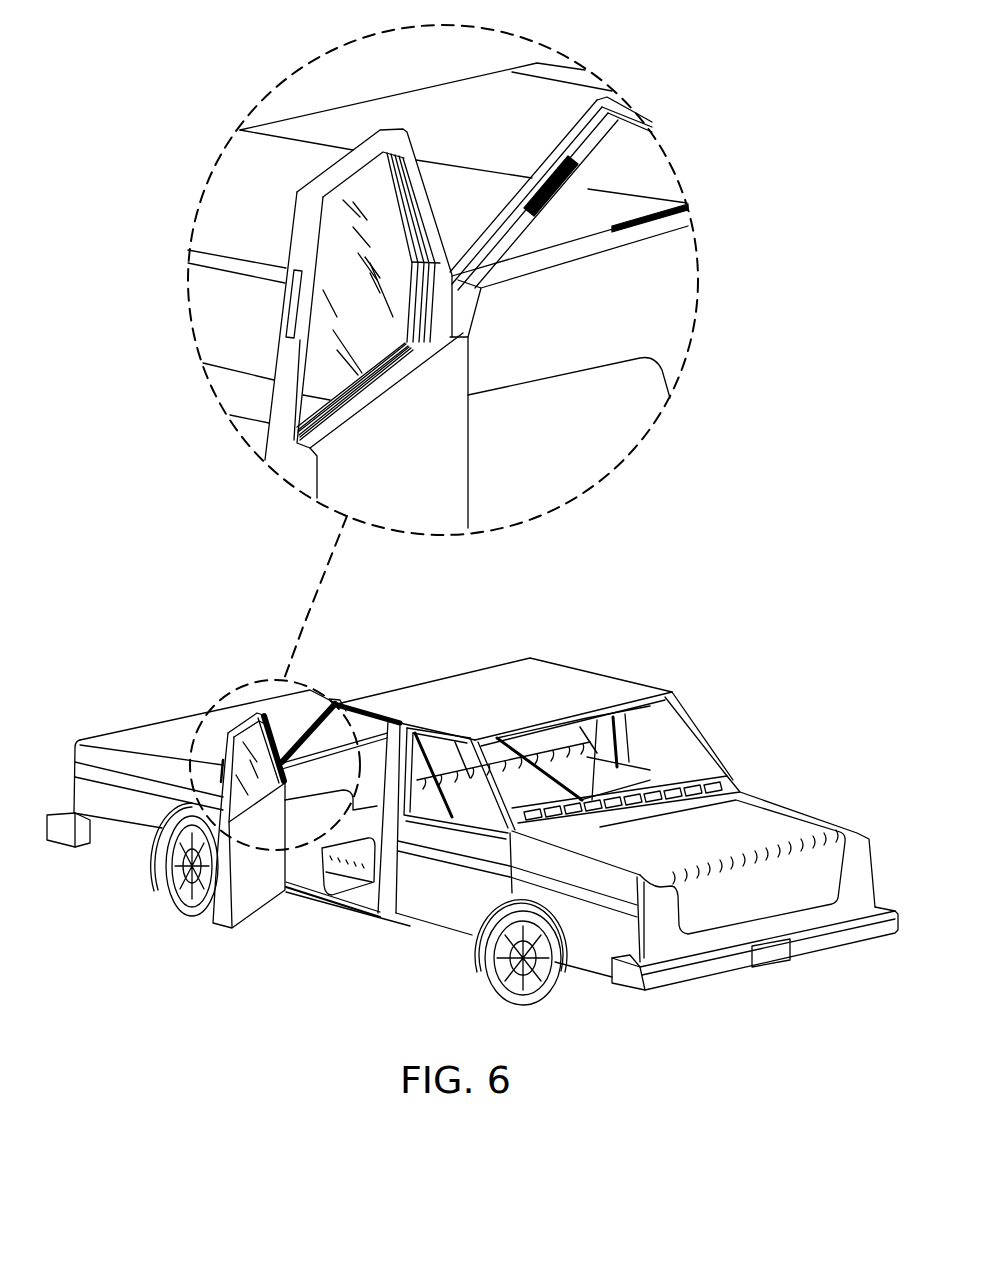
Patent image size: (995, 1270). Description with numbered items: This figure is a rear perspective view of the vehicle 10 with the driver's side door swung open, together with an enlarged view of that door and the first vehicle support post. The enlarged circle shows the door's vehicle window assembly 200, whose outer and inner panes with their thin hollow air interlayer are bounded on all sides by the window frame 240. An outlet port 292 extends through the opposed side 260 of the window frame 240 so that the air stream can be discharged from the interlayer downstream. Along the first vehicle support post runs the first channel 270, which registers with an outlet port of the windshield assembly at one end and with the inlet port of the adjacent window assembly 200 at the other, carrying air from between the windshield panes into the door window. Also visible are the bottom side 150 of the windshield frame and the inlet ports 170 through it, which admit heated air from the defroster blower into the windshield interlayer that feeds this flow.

The vehicle 10 is at (574, 631).
The vehicle window assembly 200 is at (424, 117).
The window frame 240 is at (368, 140).
The opposed side of the window frame 260 is at (307, 218).
The outlet port 292 is at (288, 292).
The first channel 270 is at (570, 182).
The bottom side of the windshield frame 150 is at (566, 265).
The inlet ports 170 is at (660, 224).